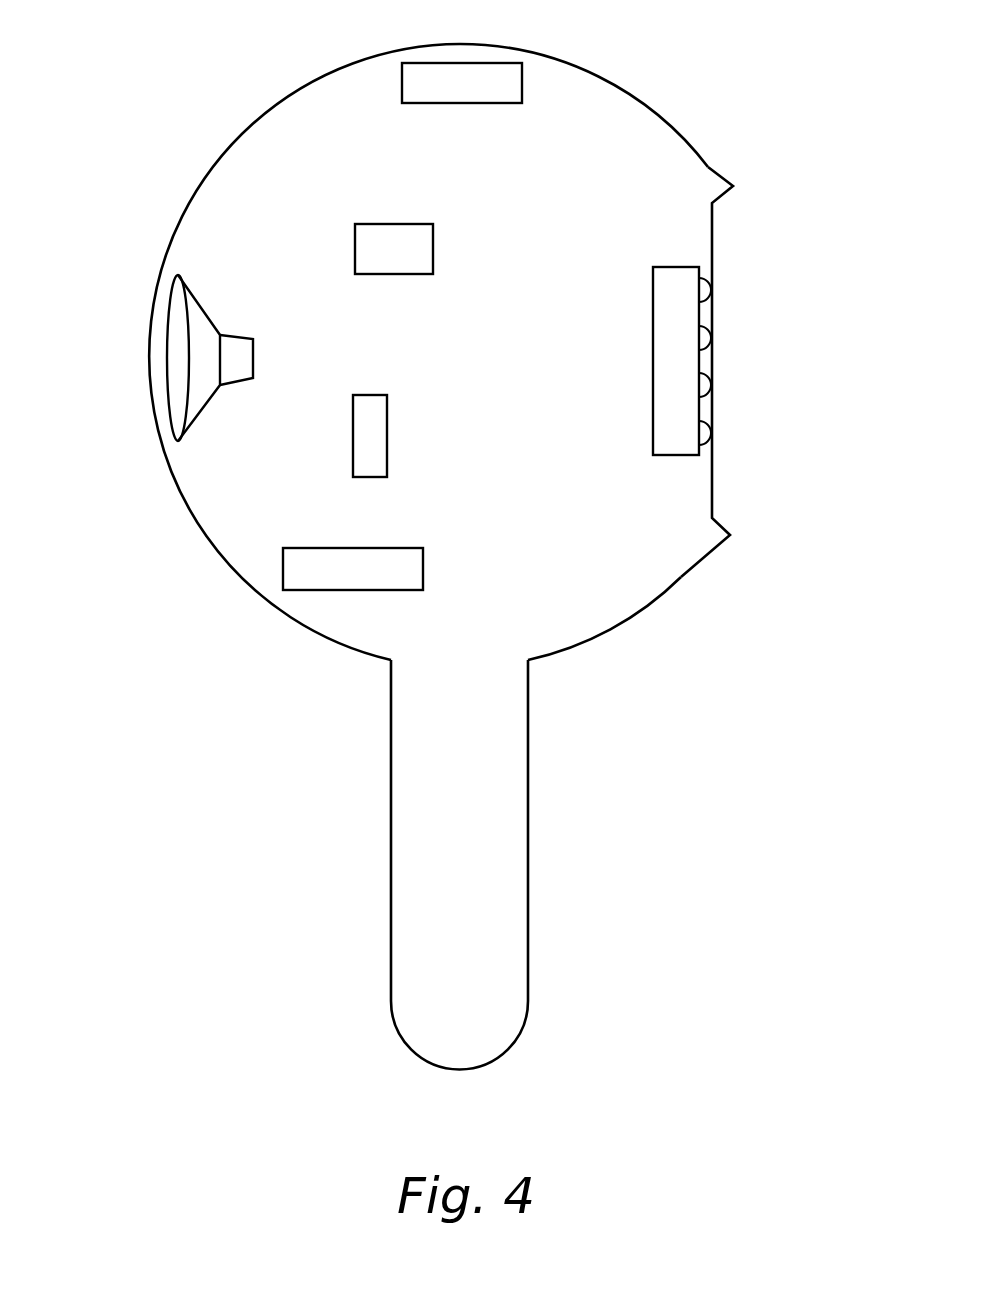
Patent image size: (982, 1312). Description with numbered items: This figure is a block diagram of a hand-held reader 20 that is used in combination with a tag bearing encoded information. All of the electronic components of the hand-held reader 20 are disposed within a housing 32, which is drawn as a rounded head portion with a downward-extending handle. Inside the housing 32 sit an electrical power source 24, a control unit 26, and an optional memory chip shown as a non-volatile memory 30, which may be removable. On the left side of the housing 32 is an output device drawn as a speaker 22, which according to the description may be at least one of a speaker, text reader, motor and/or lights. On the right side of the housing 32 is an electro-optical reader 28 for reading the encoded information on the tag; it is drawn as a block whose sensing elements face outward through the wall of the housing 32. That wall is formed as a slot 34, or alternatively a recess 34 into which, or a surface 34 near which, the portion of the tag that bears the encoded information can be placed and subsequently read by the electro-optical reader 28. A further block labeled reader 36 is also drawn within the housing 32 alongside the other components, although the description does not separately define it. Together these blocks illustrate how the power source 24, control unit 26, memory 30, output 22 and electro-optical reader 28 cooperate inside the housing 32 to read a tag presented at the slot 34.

The hand-held reader 20 is at (495, 539).
The speaker 22 is at (172, 360).
The electrical power source 24 is at (423, 562).
The control unit 26 is at (387, 430).
The electro-optical reader 28 is at (712, 290).
The non-volatile memory 30 is at (517, 93).
The housing 32 is at (256, 121).
The slot 34 is at (728, 513).
The reader 36 is at (433, 243).